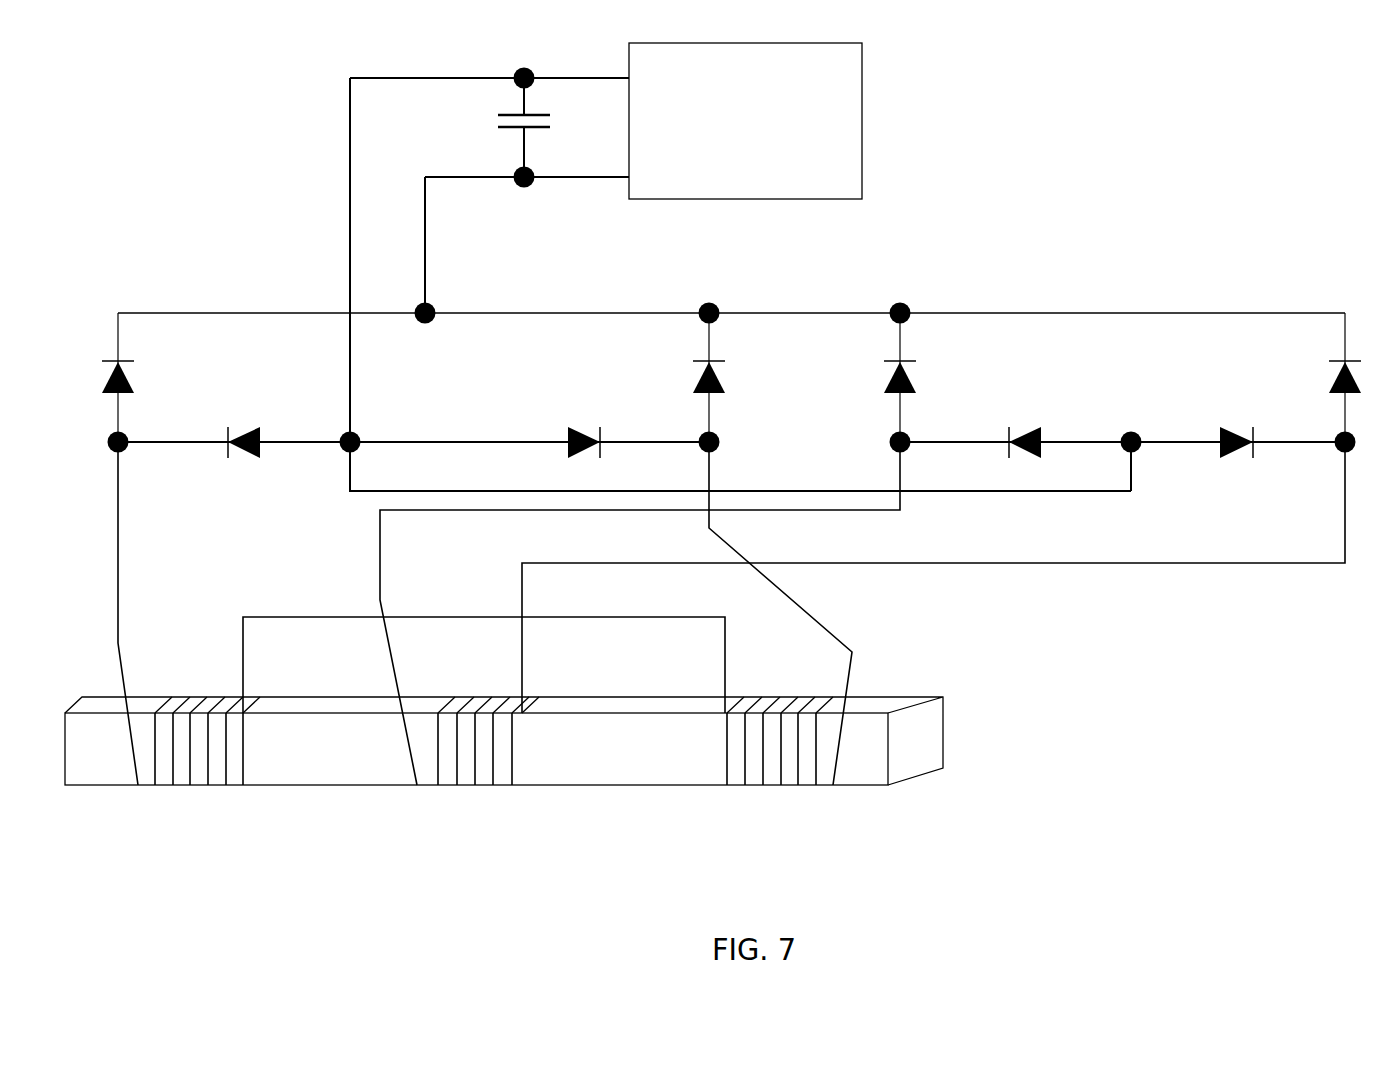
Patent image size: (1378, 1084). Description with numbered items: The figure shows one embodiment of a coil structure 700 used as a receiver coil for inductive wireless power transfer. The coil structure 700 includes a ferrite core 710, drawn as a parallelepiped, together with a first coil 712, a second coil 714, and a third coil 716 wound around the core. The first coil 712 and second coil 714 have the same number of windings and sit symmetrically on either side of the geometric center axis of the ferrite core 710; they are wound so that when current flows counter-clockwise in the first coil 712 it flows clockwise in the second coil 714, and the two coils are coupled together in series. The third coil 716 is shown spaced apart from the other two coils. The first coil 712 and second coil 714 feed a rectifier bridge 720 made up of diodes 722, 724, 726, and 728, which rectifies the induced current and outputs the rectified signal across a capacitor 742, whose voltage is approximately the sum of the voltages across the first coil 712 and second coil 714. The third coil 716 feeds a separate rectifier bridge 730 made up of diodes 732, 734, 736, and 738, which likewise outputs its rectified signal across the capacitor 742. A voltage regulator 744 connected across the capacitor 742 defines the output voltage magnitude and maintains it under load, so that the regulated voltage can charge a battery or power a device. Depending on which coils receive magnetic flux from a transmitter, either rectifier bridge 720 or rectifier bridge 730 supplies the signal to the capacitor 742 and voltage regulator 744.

The coil structure 700 is at (524, 743).
The ferrite core 710 is at (70, 785).
The first coil 712 is at (188, 808).
The second coil 714 is at (771, 808).
The third coil 716 is at (470, 808).
The rectifier bridge 720 is at (469, 317).
The diode 722 is at (108, 378).
The diode 724 is at (243, 430).
The diode 726 is at (578, 436).
The diode 728 is at (722, 385).
The rectifier bridge 730 is at (1089, 335).
The diode 732 is at (888, 378).
The diode 734 is at (1025, 430).
The diode 736 is at (1245, 432).
The diode 738 is at (1335, 378).
The capacitor 742 is at (505, 127).
The voltage regulator 744 is at (792, 199).